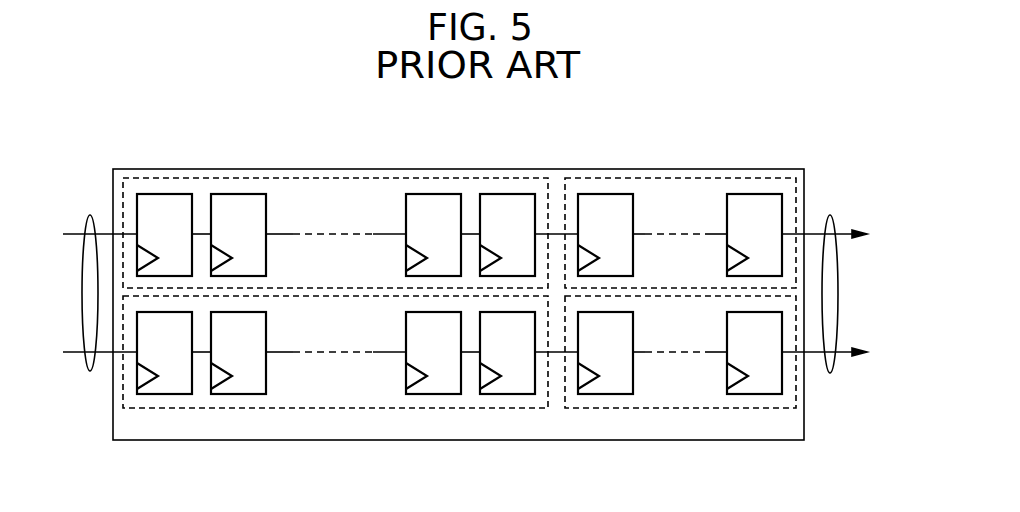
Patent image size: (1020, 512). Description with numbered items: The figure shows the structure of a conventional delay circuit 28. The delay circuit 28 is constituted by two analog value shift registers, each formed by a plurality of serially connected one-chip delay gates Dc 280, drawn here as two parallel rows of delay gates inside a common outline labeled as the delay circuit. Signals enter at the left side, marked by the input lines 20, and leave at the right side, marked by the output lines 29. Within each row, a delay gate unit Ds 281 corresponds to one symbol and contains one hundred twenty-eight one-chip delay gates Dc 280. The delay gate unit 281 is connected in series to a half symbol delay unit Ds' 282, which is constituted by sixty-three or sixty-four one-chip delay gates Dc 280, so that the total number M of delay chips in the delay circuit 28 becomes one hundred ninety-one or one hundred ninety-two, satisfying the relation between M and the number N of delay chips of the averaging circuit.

The input signal lines 20 is at (89, 215).
The delay circuit 28 is at (530, 169).
The output signal lines 29 is at (830, 215).
The one-chip delay gate 280 is at (163, 194).
The delay gate unit 281 is at (343, 169).
The half symbol delay unit 282 is at (688, 180).